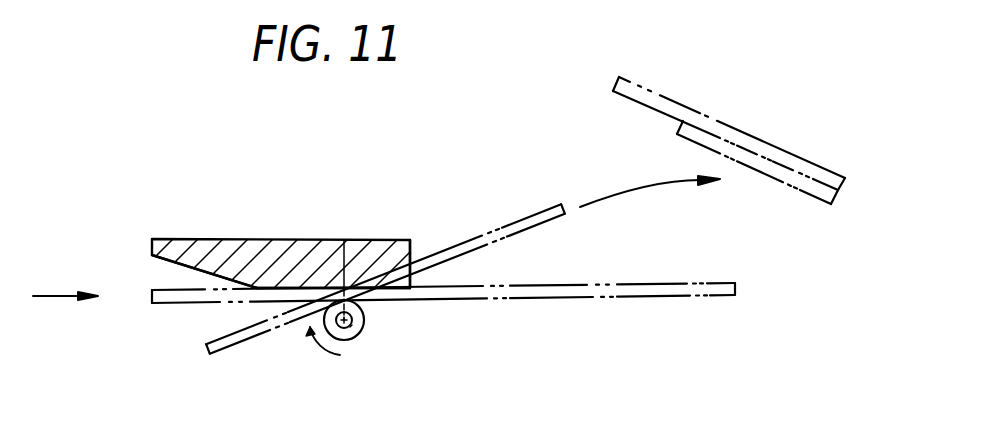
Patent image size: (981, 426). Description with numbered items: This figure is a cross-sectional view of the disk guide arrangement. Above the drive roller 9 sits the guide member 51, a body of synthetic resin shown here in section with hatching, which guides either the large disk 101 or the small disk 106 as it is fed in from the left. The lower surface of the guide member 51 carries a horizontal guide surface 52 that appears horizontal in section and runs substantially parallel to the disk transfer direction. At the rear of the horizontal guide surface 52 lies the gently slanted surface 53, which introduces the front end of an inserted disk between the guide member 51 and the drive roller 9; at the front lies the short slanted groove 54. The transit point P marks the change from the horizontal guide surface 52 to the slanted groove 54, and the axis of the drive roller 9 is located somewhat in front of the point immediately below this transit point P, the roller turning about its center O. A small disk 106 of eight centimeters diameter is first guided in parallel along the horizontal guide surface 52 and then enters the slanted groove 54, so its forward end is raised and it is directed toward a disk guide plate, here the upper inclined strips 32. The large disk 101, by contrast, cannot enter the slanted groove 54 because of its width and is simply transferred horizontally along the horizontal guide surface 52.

The drive roller 9 is at (364, 323).
The guide strips 32 is at (663, 100).
The guide member 51 is at (293, 239).
The horizontal guide surface 52 is at (297, 289).
The slanted surface 53 is at (177, 266).
The slanted groove 54 is at (402, 279).
The large disk 101 is at (683, 283).
The small disk 106 is at (523, 216).
The centre of rotation O is at (352, 326).
The transit point P is at (338, 240).